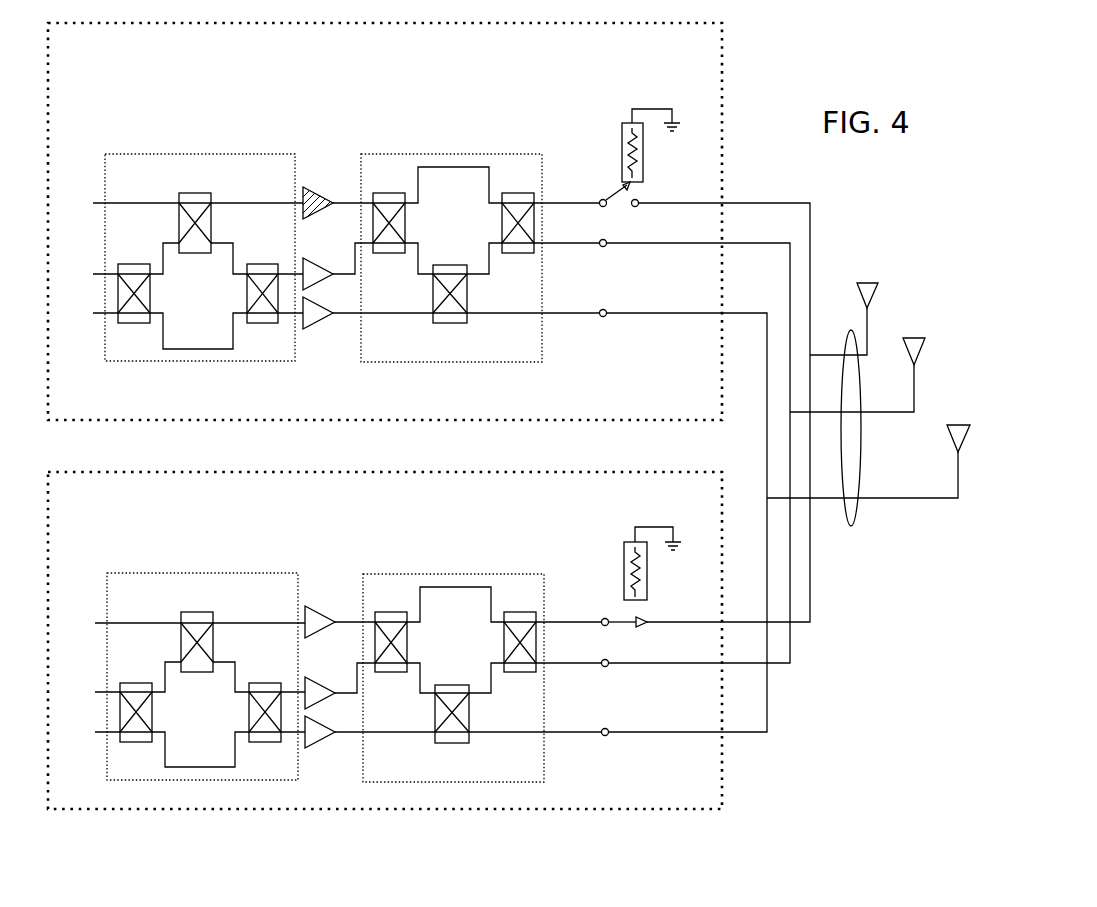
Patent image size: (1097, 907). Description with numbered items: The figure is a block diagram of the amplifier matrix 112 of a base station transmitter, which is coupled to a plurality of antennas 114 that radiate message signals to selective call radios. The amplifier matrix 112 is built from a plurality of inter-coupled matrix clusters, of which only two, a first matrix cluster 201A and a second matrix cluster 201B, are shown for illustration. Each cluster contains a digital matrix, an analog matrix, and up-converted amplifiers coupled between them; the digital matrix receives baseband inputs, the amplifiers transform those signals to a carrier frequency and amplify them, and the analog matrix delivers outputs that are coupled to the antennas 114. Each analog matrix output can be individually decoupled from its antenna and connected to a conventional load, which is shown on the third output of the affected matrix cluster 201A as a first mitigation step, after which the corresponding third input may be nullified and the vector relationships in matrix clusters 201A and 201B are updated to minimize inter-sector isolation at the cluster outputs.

The amplifier matrix 112 is at (886, 77).
The antennas 114 is at (853, 527).
The matrix cluster 201A is at (722, 87).
The matrix cluster 201B is at (683, 810).